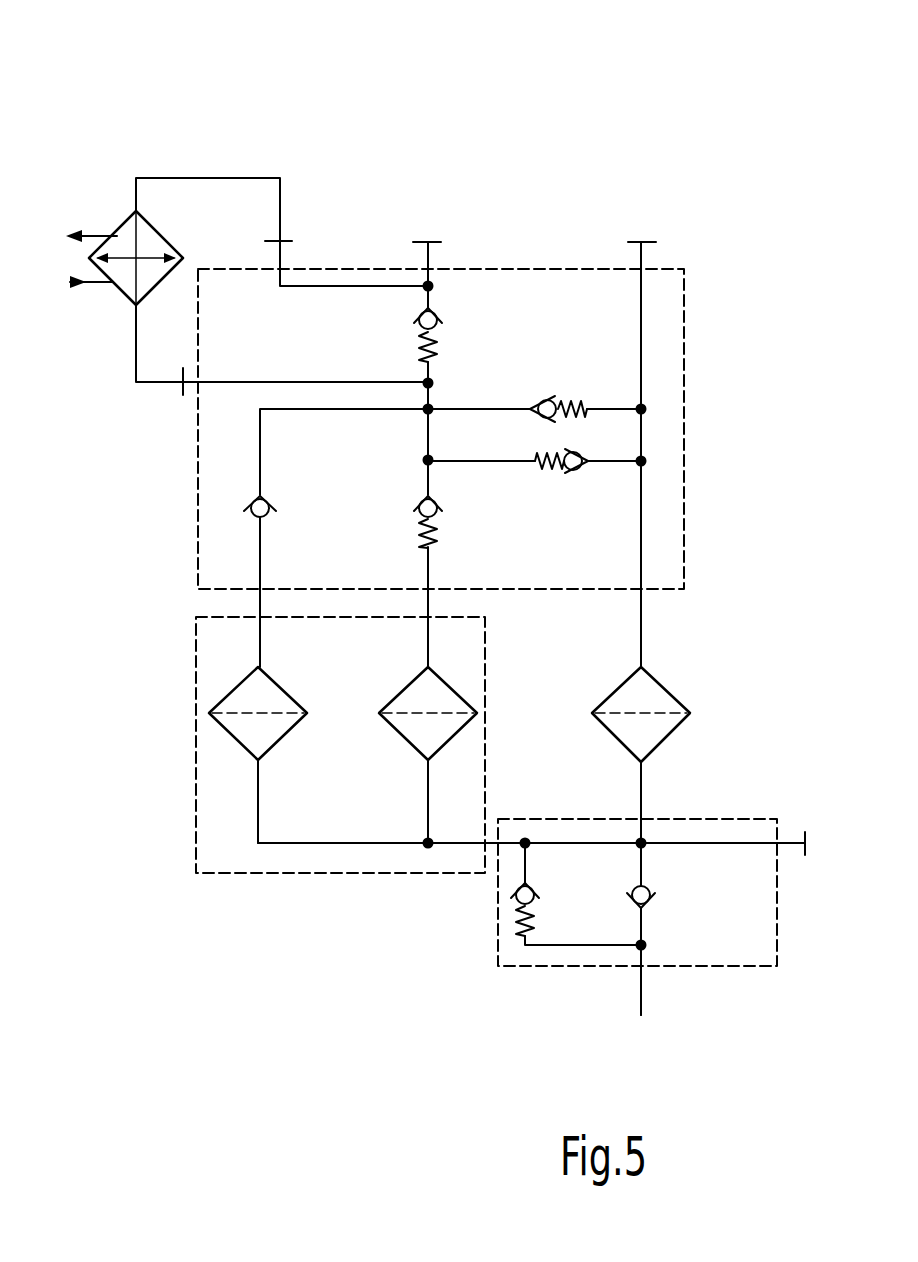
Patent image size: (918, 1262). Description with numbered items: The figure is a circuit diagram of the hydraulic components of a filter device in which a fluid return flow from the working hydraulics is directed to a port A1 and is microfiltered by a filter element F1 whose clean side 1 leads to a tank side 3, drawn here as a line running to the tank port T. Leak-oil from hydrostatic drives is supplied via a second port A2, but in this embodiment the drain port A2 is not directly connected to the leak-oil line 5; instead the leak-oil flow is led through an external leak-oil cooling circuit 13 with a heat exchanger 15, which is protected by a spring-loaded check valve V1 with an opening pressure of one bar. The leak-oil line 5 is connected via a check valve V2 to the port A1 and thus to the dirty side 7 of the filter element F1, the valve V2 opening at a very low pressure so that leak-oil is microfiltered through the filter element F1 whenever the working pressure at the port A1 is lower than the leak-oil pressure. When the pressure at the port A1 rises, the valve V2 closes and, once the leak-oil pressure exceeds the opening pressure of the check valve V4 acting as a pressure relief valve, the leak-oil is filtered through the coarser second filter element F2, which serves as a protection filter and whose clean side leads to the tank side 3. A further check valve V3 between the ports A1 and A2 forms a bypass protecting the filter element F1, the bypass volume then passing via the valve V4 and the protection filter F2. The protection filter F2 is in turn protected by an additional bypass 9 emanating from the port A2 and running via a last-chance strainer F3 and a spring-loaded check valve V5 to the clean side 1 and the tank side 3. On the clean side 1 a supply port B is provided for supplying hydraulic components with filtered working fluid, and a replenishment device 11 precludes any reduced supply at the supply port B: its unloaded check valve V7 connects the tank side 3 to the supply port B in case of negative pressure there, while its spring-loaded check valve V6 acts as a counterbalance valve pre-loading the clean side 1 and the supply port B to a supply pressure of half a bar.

The clean side 1 is at (555, 843).
The tank side 3 is at (640, 955).
The leak-oil line 5 is at (430, 396).
The dirty side 7 is at (643, 668).
The bypass 9 is at (260, 452).
The replenishment device 11 is at (562, 982).
The leak-oil cooling circuit 13 is at (222, 162).
The heat exchanger 15 is at (120, 232).
The check valve V1 is at (415, 323).
The check valve V2 is at (550, 396).
The check valve V3 is at (568, 473).
The check valve V4 is at (413, 512).
The check valve V5 is at (258, 498).
The check valve V6 is at (512, 900).
The check valve V7 is at (650, 893).
The filter element F1 is at (660, 693).
The second filter element F2 is at (437, 688).
The strainer F3 is at (283, 725).
The port A1 is at (643, 440).
The port A2 is at (428, 260).
The supply port B is at (735, 842).
The tank port T is at (640, 995).